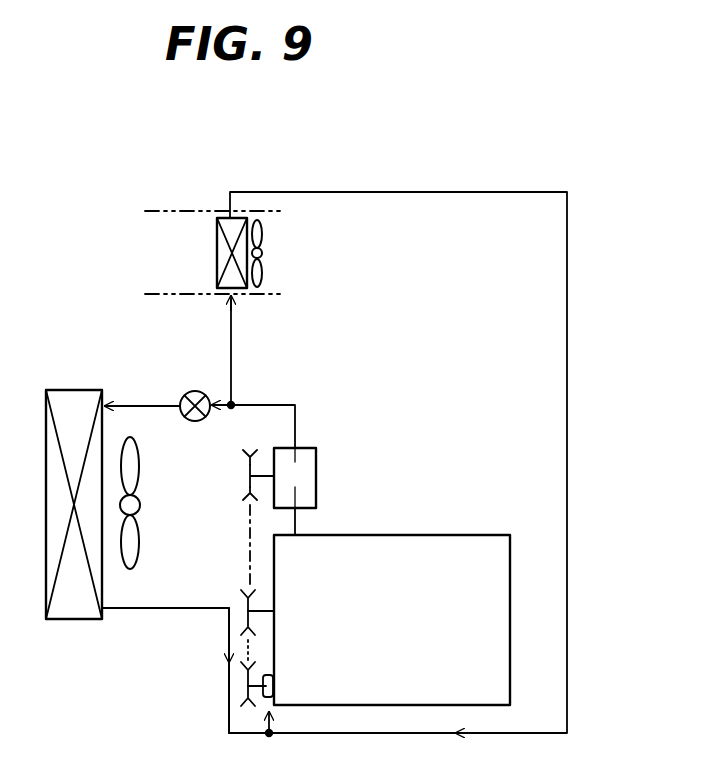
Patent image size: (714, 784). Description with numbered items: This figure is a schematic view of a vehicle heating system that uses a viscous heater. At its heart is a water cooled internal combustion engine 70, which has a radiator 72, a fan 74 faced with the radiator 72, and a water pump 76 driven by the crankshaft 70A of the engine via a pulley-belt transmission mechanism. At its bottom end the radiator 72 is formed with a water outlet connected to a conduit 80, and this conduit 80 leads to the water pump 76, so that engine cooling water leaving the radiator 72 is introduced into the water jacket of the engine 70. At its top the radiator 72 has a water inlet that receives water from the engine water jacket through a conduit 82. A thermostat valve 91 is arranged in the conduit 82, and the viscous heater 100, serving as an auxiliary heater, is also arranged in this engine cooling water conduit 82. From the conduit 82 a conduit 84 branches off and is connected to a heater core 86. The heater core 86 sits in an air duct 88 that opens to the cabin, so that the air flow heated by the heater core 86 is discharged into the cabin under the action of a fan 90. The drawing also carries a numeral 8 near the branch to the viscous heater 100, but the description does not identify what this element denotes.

The internal combustion engine 70 is at (503, 575).
The crankshaft 70A is at (258, 612).
The radiator 72 is at (76, 395).
The fan 74 is at (138, 540).
The water pump 76 is at (272, 683).
The conduit 80 is at (228, 706).
The conduit 82 is at (271, 405).
The conduit 84 is at (193, 421).
The heater core 86 is at (220, 246).
The air duct 88 is at (153, 210).
The fan 90 is at (263, 270).
The thermostat valve 91 is at (232, 340).
The viscous heater 100 is at (307, 467).
The coolant temperature sensor 8 is at (268, 470).